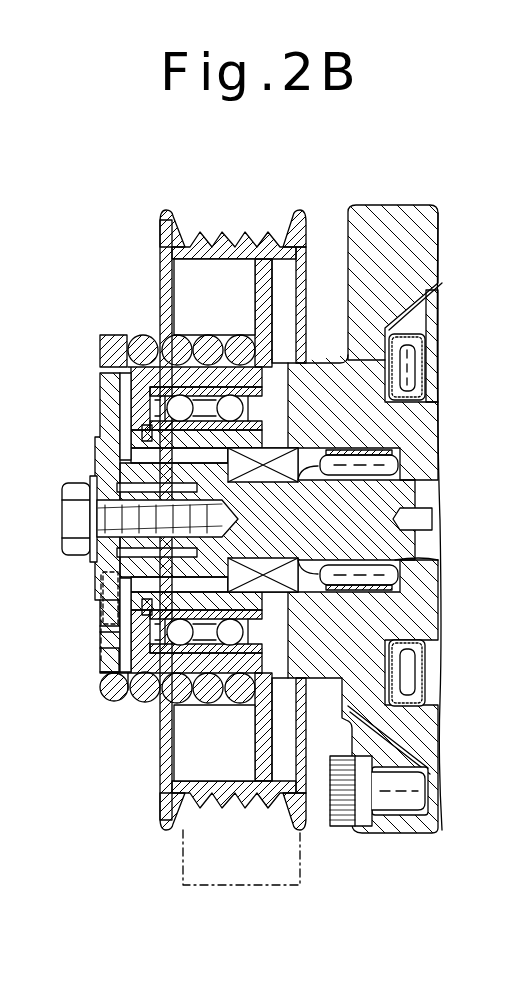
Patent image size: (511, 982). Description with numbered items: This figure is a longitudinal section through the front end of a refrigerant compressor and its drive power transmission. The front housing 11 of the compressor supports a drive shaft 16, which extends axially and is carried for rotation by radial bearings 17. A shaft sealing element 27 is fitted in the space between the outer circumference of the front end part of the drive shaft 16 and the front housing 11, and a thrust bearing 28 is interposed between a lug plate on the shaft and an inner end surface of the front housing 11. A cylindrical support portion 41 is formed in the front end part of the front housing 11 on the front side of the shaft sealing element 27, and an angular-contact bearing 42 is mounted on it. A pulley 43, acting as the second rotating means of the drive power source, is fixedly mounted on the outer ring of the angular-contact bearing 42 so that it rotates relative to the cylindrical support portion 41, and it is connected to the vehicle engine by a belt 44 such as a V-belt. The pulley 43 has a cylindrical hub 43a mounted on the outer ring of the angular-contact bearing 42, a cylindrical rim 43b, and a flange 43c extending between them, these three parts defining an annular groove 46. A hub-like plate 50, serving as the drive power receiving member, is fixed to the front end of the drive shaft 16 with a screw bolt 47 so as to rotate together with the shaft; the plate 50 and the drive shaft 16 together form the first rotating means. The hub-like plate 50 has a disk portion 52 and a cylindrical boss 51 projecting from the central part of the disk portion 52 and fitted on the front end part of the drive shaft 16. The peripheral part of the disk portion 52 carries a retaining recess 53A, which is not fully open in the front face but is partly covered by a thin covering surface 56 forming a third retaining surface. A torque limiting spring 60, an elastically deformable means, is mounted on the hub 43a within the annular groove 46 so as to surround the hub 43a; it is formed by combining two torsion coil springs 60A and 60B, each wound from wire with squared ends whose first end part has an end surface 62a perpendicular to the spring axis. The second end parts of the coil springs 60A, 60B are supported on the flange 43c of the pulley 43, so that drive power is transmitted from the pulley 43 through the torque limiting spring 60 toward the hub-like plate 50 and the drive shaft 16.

The front housing 11 is at (388, 213).
The drive shaft 16 is at (433, 546).
The radial bearings 17 is at (403, 565).
The shaft sealing element 27 is at (272, 484).
The thrust bearing 28 is at (392, 369).
The cylindrical support portion 41 is at (140, 444).
The angular-contact bearing 42 is at (142, 416).
The pulley 43 is at (167, 493).
The cylindrical hub 43a is at (145, 377).
The cylindrical rim 43b is at (185, 233).
The flange 43c is at (251, 306).
The belt 44 is at (300, 870).
The annular groove 46 is at (230, 313).
The screw bolt 47 is at (66, 517).
The hub-like plate 50 is at (92, 466).
The cylindrical boss 51 is at (128, 586).
The disk portion 52 is at (99, 654).
The retaining recess 53A is at (108, 641).
The covering surfaces 56 is at (102, 613).
The torque limiting spring 60 is at (147, 501).
The torsion coil spring 60A is at (126, 400).
The torsion coil spring 60B is at (107, 335).
The end surface 62a is at (103, 689).